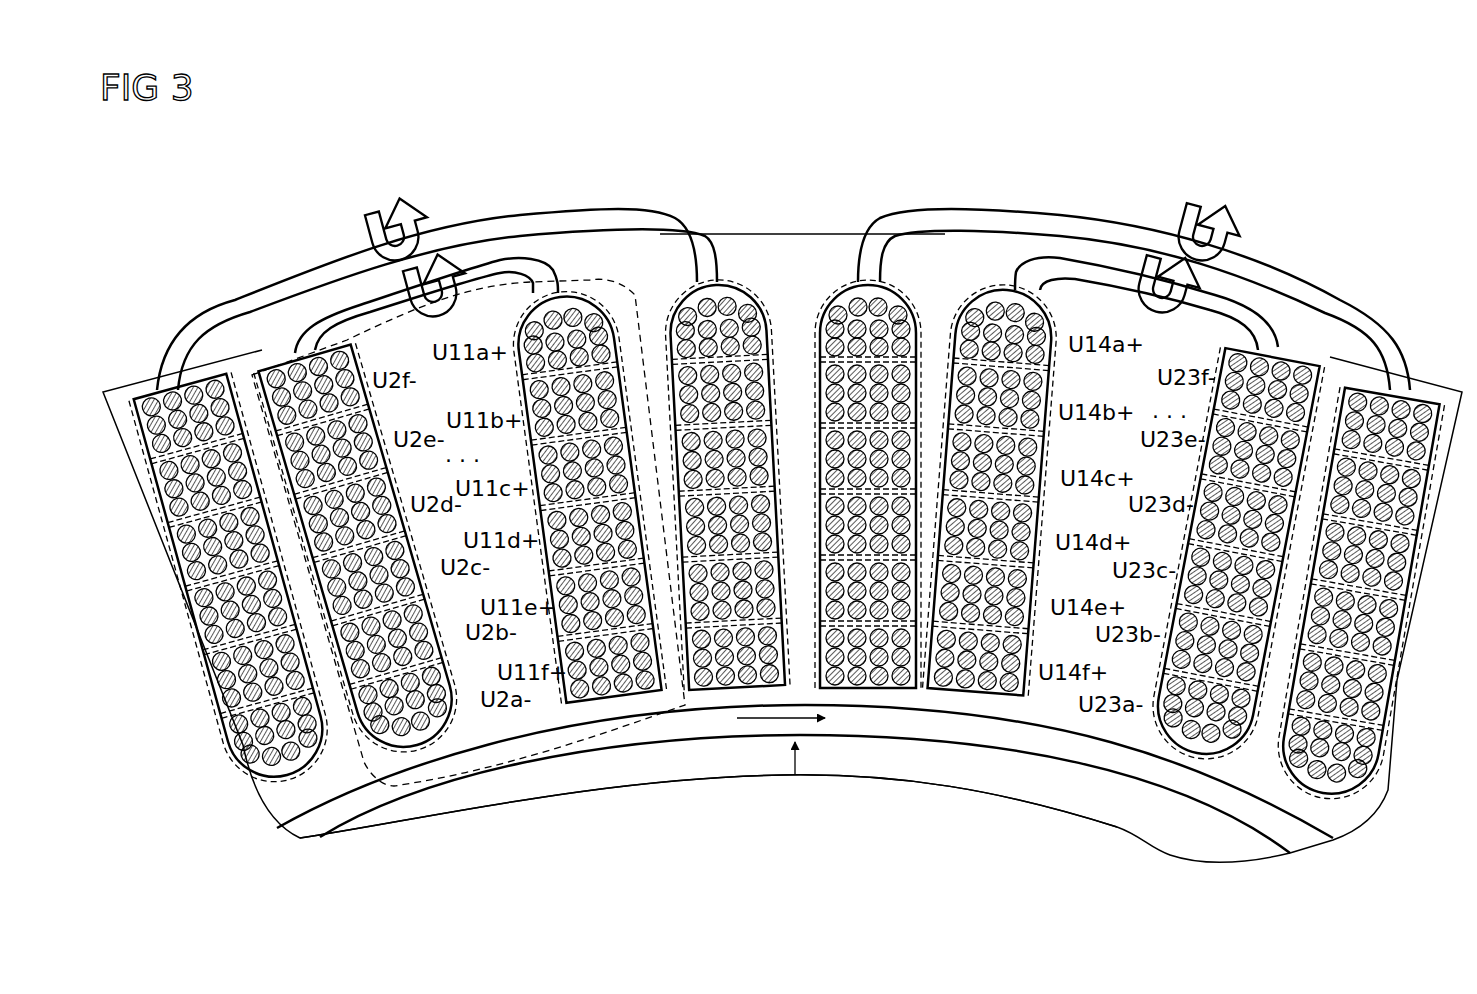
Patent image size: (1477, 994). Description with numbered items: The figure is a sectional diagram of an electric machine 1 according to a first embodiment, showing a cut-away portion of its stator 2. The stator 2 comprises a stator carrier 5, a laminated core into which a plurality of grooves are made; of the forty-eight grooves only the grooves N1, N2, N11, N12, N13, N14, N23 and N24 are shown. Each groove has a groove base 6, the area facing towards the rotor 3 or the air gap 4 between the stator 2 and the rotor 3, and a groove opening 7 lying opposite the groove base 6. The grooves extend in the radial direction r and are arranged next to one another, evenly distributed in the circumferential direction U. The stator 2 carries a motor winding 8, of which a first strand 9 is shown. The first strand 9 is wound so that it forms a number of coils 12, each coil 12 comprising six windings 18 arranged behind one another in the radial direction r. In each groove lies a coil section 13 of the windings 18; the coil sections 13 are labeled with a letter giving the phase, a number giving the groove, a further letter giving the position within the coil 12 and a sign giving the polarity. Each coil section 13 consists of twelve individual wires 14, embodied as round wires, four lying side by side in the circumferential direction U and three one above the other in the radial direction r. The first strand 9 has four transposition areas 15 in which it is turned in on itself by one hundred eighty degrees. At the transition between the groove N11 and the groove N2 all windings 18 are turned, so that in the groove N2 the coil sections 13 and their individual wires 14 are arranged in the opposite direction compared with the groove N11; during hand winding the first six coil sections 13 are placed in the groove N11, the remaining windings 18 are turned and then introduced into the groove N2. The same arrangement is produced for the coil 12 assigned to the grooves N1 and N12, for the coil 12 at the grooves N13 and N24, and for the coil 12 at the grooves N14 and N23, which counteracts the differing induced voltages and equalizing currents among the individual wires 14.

The electric machine 1 is at (605, 130).
The stator 2 is at (762, 175).
The rotor 3 is at (722, 780).
The air gap 4 is at (318, 825).
The stator carrier 5 is at (793, 247).
The groove base 6 is at (902, 440).
The groove opening 7 is at (870, 704).
The motor winding 8 is at (1025, 178).
The first strand 9 is at (1155, 190).
The coil 12 is at (470, 760).
The coil section 13 is at (460, 554).
The individual wire 14 is at (471, 554).
The transposition area 15 is at (376, 197).
The winding 18 is at (468, 575).
The groove N1 is at (143, 397).
The groove N2 is at (368, 362).
The groove N11 is at (578, 292).
The groove N12 is at (732, 262).
The groove N13 is at (905, 278).
The groove N14 is at (1050, 292).
The groove N23 is at (1292, 345).
The groove N24 is at (1428, 392).
The circumferential direction U is at (770, 722).
The radial direction r is at (797, 757).